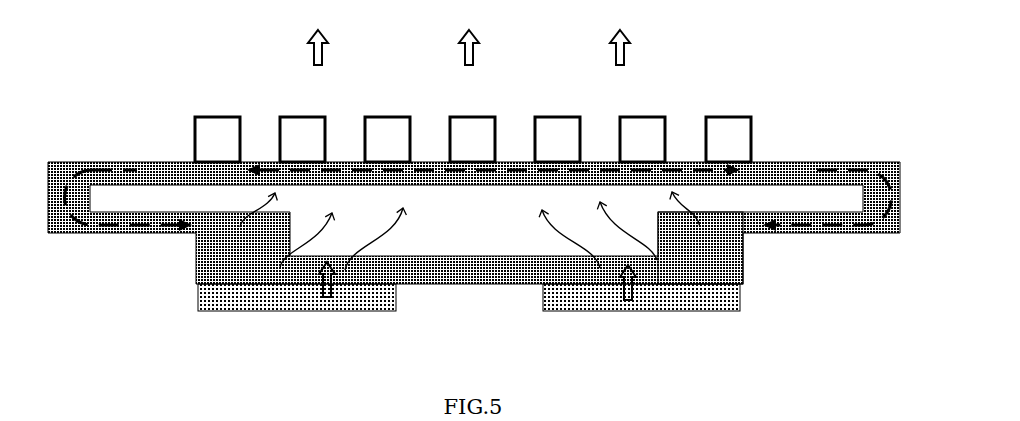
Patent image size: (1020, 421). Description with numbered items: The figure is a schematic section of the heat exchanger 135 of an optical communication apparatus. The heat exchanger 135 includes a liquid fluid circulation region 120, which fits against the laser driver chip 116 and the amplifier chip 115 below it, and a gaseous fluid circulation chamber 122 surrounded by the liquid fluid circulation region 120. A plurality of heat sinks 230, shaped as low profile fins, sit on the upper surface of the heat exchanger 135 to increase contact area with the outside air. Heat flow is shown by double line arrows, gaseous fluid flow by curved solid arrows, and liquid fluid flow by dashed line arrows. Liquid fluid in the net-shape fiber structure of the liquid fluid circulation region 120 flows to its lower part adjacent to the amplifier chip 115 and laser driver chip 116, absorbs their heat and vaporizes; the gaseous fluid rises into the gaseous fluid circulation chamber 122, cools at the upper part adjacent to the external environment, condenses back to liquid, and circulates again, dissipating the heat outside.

The liquid fluid circulation region 120 is at (217, 253).
The gaseous fluid circulation chamber 122 is at (470, 231).
The heat exchanger 135 is at (744, 253).
The amplifier chip 115 is at (646, 313).
The laser driver chip 116 is at (299, 313).
The heat sinks 230 is at (473, 139).